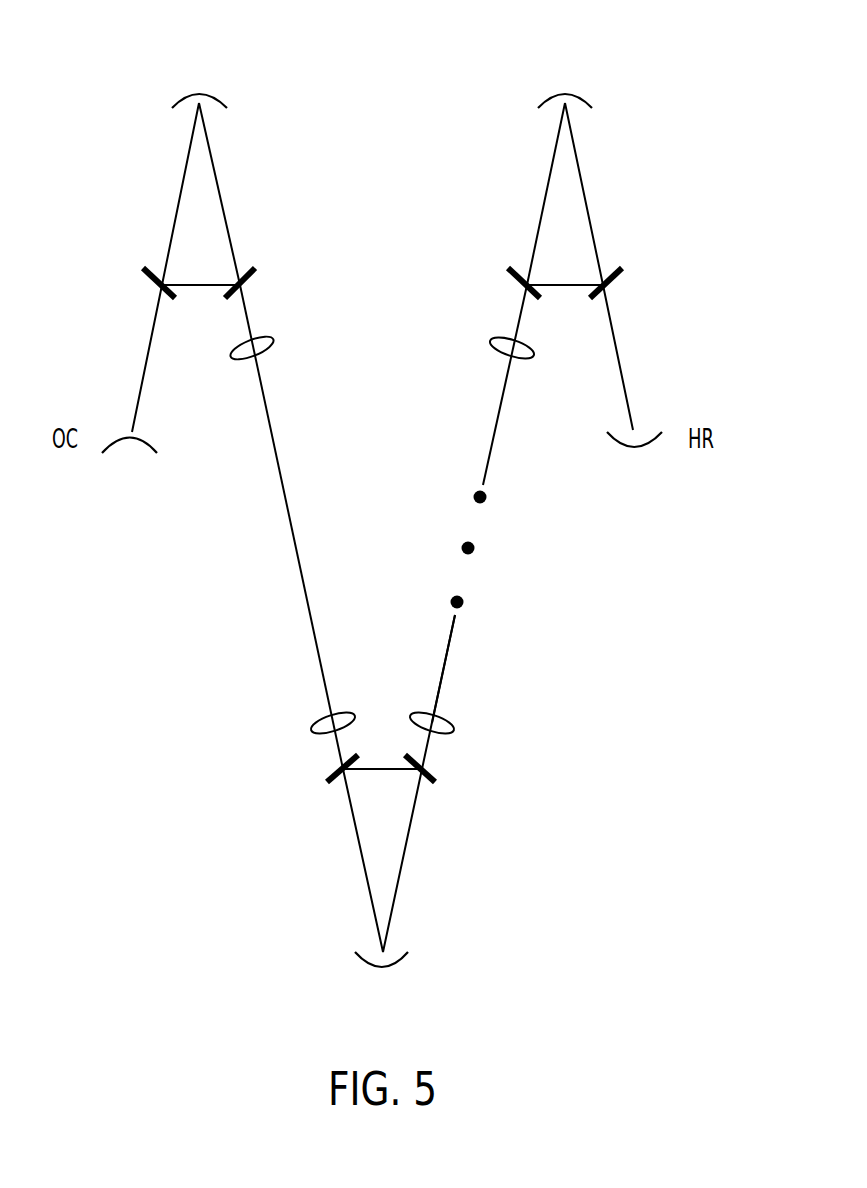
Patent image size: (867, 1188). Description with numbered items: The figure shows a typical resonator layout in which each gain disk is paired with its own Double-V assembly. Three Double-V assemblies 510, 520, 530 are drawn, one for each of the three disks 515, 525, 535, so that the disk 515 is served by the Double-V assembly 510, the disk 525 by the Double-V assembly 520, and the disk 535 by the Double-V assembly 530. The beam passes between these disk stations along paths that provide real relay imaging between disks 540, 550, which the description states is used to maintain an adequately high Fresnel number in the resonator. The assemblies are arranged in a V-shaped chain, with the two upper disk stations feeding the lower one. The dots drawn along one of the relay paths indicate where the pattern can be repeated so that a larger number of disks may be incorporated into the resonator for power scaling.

The Double-V assembly 510 is at (168, 247).
The disk 515 is at (177, 105).
The Double-V assembly 520 is at (598, 247).
The disk 525 is at (587, 105).
The Double-V assembly 530 is at (338, 778).
The disk 535 is at (370, 917).
The real relay imaging between disks 540 is at (489, 451).
The real relay imaging between disks 550 is at (290, 533).